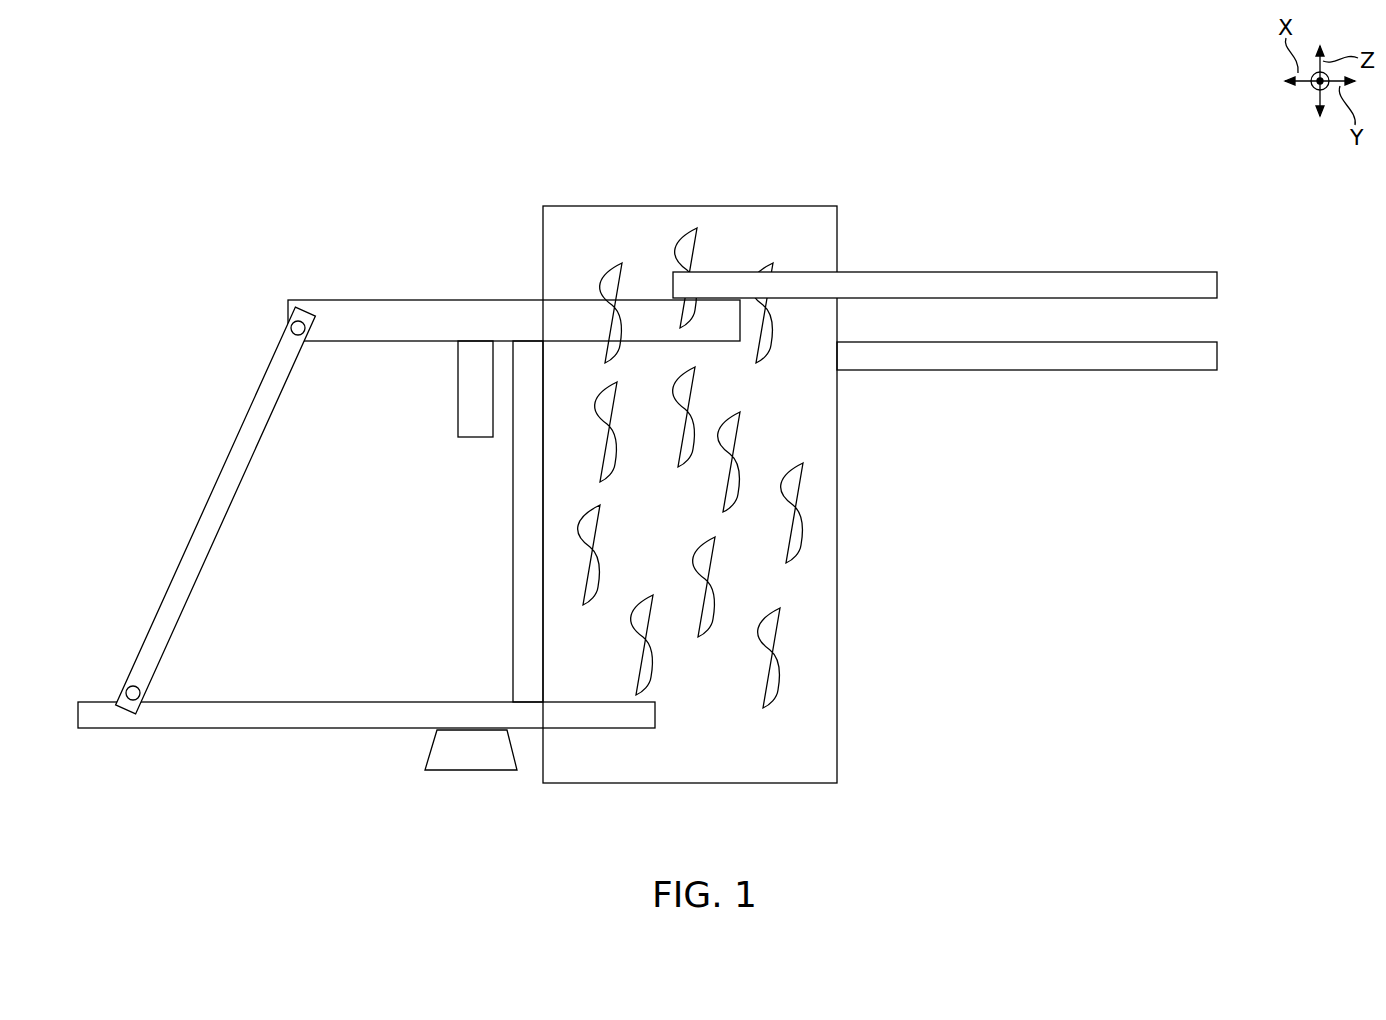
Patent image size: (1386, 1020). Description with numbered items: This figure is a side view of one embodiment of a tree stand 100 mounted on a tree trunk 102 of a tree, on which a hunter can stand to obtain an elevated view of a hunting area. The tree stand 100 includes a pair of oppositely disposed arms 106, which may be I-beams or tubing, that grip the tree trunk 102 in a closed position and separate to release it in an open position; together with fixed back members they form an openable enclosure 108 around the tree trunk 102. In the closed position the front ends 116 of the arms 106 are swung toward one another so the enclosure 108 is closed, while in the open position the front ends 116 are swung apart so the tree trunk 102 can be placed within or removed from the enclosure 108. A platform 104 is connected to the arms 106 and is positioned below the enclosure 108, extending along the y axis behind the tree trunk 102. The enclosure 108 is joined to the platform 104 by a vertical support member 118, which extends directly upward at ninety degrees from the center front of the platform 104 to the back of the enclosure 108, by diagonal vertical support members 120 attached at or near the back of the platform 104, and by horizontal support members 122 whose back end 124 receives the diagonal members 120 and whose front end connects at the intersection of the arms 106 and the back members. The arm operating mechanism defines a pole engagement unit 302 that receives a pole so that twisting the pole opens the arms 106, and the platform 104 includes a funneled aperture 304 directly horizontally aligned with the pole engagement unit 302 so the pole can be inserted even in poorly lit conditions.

The tree stand 100 is at (412, 257).
The tree trunk 102 is at (837, 235).
The platform 104 is at (304, 731).
The oppositely disposed arms 106 is at (997, 271).
The openable enclosure 108 is at (918, 320).
The front ends of the arms 116 is at (1188, 272).
The vertical support member 118 is at (511, 567).
The vertical support members 120 is at (191, 540).
The horizontal support members 122 is at (505, 297).
The back end of the horizontal support members 124 is at (288, 300).
The pole engagement unit 302 is at (455, 384).
The funneled aperture 304 is at (474, 771).